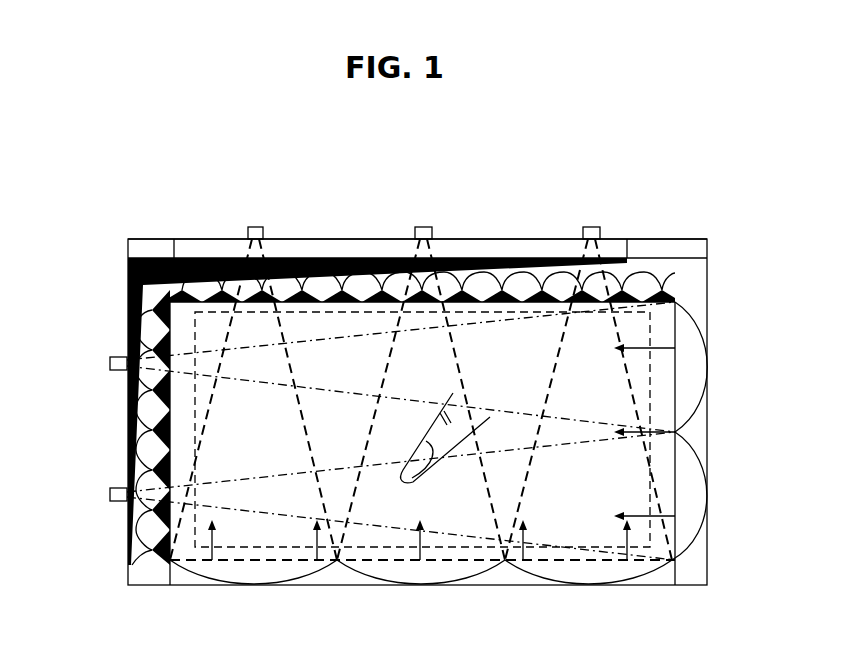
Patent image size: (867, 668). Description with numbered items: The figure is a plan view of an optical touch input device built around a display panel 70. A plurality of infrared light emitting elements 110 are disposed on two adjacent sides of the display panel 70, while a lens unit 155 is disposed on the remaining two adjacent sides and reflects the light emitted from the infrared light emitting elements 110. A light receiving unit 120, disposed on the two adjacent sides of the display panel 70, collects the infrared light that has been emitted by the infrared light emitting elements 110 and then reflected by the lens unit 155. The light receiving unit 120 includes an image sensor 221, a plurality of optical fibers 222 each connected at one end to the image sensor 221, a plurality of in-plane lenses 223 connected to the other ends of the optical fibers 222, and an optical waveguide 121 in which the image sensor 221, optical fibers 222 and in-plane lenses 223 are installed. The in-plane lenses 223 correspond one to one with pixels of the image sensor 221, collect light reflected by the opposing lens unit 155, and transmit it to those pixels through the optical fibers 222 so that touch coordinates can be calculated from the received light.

The light receiving unit 120 is at (667, 182).
The image sensor 221 is at (152, 250).
The optical fibers 222 is at (318, 256).
The in-plane lenses 223 is at (505, 280).
The optical waveguide 121 is at (667, 250).
The infrared light emitting elements 110 is at (110, 362).
The display panel 70 is at (608, 370).
The lens unit 155 is at (700, 450).